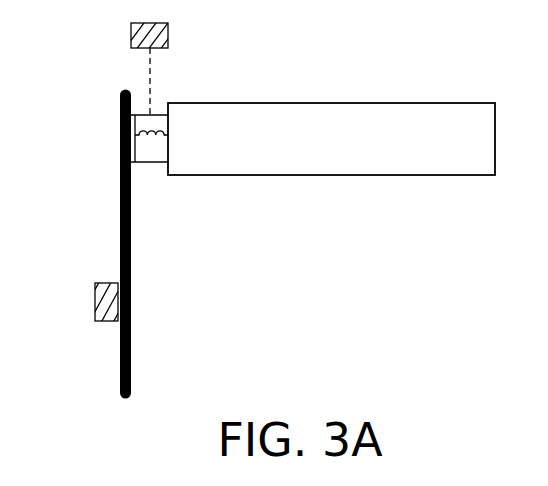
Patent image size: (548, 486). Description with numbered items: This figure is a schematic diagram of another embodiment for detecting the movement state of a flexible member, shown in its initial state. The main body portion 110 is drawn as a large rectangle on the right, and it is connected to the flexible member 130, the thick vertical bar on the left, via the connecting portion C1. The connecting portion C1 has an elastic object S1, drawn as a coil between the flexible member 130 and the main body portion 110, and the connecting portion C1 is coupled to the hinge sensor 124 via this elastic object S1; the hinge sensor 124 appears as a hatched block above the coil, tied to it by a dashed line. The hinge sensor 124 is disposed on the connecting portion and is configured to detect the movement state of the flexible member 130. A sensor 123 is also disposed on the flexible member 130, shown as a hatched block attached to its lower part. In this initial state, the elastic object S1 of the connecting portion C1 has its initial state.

The main body portion 110 is at (435, 103).
The sensor 123 is at (95, 303).
The hinge sensor 124 is at (131, 33).
The flexible member 130 is at (132, 331).
The elastic object S1 is at (156, 130).
The connecting portion C1 is at (155, 162).